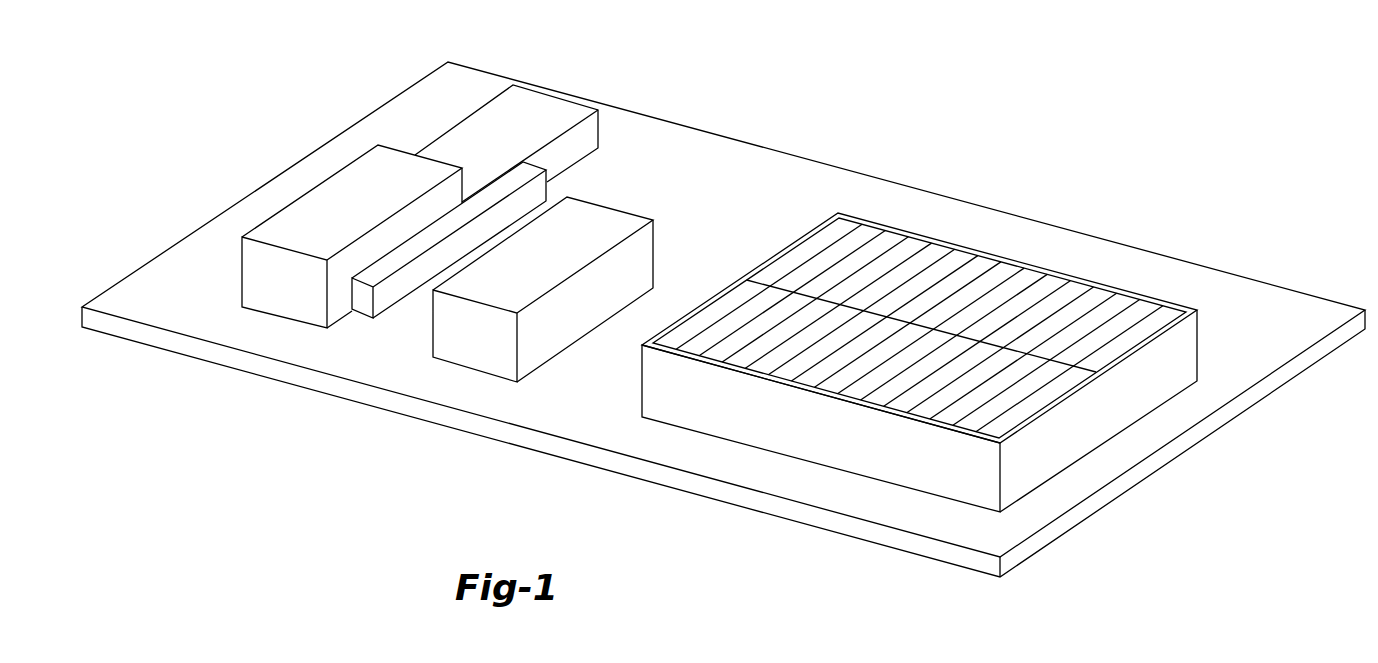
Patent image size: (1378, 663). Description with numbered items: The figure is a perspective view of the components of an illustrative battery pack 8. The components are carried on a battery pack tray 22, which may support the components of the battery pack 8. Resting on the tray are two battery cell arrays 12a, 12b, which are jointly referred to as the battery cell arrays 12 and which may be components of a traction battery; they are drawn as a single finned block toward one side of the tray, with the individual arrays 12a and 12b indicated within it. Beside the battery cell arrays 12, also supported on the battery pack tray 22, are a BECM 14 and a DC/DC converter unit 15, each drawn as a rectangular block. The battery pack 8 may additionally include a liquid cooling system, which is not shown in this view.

The battery pack 8 is at (268, 100).
The battery pack tray 22 is at (735, 170).
The DC/DC converter unit 15 is at (323, 213).
The BECM 14 is at (587, 232).
The battery cell arrays 12 is at (1027, 146).
The battery cell array 12a is at (840, 330).
The battery cell array 12b is at (979, 288).